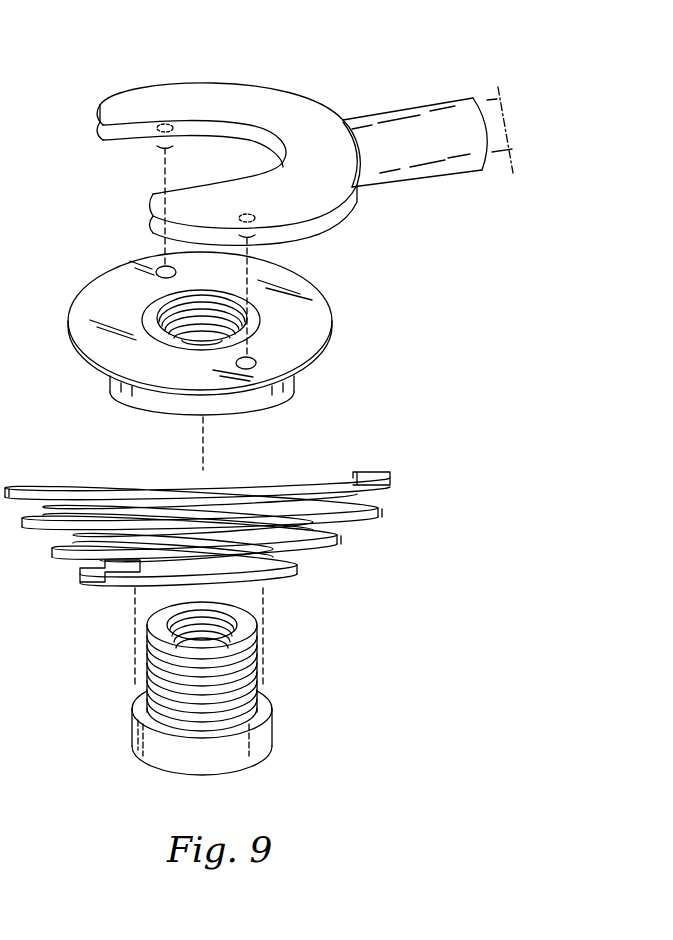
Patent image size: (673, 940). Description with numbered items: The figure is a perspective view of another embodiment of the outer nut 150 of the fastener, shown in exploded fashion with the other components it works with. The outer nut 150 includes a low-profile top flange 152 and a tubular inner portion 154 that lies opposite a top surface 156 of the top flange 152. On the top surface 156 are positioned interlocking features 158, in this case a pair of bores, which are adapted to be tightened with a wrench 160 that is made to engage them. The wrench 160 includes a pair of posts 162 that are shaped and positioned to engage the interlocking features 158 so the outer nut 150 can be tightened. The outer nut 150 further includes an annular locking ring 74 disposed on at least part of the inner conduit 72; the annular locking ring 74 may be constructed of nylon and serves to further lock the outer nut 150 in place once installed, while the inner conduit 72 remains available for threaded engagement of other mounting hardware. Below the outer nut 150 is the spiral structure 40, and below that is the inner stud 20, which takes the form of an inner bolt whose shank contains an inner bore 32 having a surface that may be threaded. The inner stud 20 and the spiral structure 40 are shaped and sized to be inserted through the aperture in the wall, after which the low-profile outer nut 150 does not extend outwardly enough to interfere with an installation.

The wrench 160 is at (268, 98).
The posts 162 is at (162, 148).
The interlocking feature 158 is at (160, 268).
The inner conduit 72 is at (177, 320).
The annular locking ring 74 is at (150, 330).
The top flange 152 is at (233, 323).
The top surface 156 is at (309, 347).
The outer nut 150 is at (264, 323).
The tubular inner portion 154 is at (258, 393).
The spiral structure 40 is at (67, 477).
The inner bore 32 is at (180, 628).
The inner stud 20 is at (162, 710).